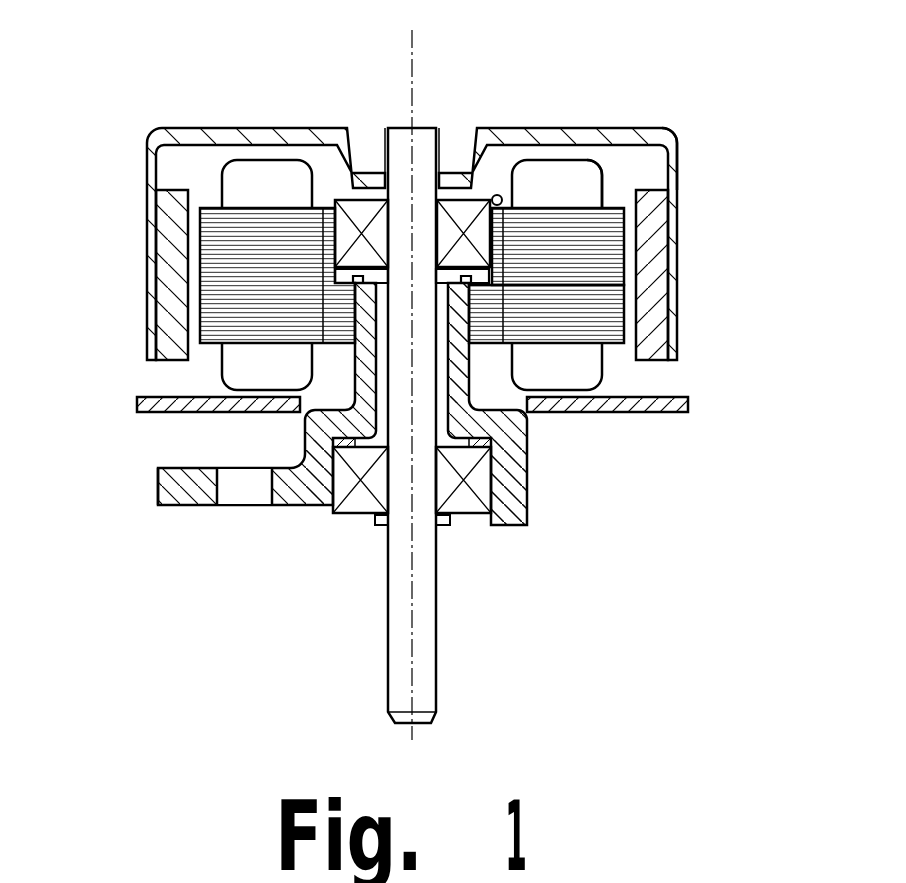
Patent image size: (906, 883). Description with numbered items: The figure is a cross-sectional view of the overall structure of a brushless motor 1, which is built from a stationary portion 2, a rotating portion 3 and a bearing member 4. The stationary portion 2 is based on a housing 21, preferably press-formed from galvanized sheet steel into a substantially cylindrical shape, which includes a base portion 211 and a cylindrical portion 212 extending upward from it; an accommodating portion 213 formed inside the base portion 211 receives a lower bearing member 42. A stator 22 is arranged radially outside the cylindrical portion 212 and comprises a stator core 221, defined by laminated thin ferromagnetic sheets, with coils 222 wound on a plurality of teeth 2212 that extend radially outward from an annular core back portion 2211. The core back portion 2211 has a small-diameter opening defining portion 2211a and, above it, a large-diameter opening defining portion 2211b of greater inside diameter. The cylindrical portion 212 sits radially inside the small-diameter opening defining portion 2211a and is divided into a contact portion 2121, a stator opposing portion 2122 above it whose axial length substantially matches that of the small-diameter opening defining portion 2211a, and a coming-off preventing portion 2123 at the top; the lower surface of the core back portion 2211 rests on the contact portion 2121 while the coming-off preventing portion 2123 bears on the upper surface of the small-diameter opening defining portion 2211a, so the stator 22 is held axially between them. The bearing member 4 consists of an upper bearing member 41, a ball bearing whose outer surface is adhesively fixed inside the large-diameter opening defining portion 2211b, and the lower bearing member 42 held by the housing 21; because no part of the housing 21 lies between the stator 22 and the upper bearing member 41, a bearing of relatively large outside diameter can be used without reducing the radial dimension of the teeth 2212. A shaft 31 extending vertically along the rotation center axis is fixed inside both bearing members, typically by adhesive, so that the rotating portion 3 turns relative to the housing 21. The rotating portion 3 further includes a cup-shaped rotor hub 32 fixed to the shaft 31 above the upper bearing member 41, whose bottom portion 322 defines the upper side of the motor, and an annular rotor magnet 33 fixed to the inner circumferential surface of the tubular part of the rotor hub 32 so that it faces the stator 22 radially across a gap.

The brushless motor 1 is at (45, 72).
The stationary portion 2 is at (192, 545).
The rotating portion 3 is at (200, 103).
The bearing member 4 is at (367, 218).
The shaft 31 is at (428, 148).
The upper bearing member 41 is at (478, 212).
The rotor hub 32 is at (558, 136).
The bottom portion 322 is at (641, 136).
The stator core 221 is at (622, 205).
The rotor magnet 33 is at (653, 222).
The large-diameter opening defining portion 2211b is at (497, 267).
The stator opposing portion 2122 is at (457, 307).
The small-diameter opening defining portion 2211a is at (488, 332).
The contact portion 2121 is at (473, 345).
The coming-off preventing portion 2123 is at (347, 273).
The core back portion 2211 is at (327, 283).
The teeth 2212 is at (225, 338).
The stator 22 is at (212, 348).
The coils 222 is at (257, 378).
The base portion 211 is at (163, 498).
The cylindrical portion 212 is at (352, 347).
The accommodating portion 213 is at (317, 483).
The lower bearing member 42 is at (455, 520).
The housing 21 is at (503, 497).